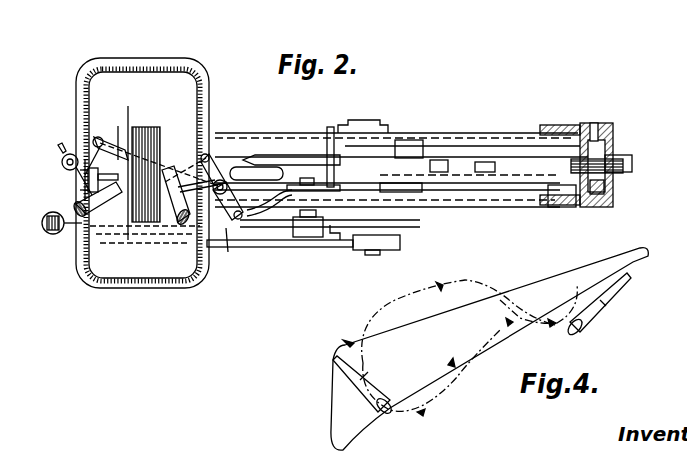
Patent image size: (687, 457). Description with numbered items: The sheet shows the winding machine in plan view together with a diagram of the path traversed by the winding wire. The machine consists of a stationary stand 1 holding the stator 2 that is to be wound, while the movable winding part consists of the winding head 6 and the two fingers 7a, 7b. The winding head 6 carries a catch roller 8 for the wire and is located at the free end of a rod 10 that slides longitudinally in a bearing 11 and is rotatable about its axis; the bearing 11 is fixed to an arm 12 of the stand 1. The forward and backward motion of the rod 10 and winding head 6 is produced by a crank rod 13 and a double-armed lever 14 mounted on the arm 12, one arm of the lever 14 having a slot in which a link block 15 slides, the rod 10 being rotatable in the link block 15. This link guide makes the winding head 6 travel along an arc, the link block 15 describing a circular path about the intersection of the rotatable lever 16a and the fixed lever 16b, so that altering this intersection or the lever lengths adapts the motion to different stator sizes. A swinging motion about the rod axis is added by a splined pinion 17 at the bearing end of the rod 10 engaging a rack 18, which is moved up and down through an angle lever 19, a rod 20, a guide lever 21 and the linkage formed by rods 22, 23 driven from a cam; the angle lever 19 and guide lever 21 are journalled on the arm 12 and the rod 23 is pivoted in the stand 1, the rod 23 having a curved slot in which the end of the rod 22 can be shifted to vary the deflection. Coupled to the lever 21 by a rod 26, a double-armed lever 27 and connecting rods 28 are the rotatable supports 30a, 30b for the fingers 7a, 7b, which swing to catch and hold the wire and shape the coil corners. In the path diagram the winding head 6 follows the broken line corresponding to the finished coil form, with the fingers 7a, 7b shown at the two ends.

In FIG. 2, the stationary stand 1 is at (165, 57).
In FIG. 2, the stator 2 is at (150, 130).
In FIG. 2, the winding head 6 is at (86, 162).
In FIG. 2, the finger 7a is at (92, 208).
In FIG. 4, the finger 7a is at (372, 392).
In FIG. 2, the finger 7b is at (182, 222).
In FIG. 4, the finger 7b is at (592, 322).
In FIG. 2, the catch roller 8 is at (108, 178).
In FIG. 2, the rod 10 is at (490, 163).
In FIG. 2, the bearing 11 is at (607, 123).
In FIG. 2, the arm 12 is at (437, 136).
In FIG. 2, the crank rod 13 is at (345, 247).
In FIG. 2, the double-armed lever 14 is at (408, 228).
In FIG. 2, the link block 15 is at (307, 237).
In FIG. 2, the rotatable lever 16a is at (417, 163).
In FIG. 2, the fixed lever 16b is at (381, 127).
In FIG. 2, the pinion 17 is at (603, 157).
In FIG. 2, the rack 18 is at (596, 192).
In FIG. 2, the angle lever 19 is at (556, 182).
In FIG. 2, the rod 20 is at (498, 182).
In FIG. 2, the guide lever 21 is at (298, 200).
In FIG. 2, the rod 22 is at (258, 220).
In FIG. 2, the rod 23 is at (108, 232).
In FIG. 2, the rod 26 is at (299, 155).
In FIG. 2, the double-armed lever 27 is at (232, 224).
In FIG. 2, the connecting rods 28 is at (118, 128).
In FIG. 2, the rotatable support 30a is at (62, 158).
In FIG. 2, the rotatable support 30b is at (221, 182).